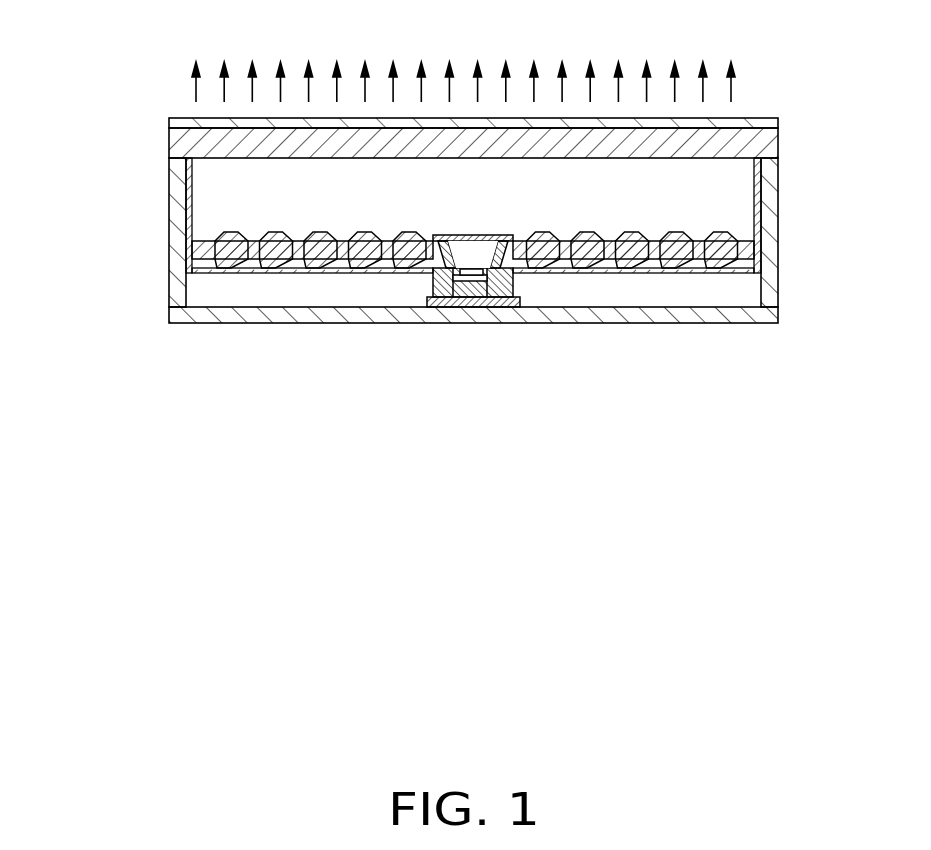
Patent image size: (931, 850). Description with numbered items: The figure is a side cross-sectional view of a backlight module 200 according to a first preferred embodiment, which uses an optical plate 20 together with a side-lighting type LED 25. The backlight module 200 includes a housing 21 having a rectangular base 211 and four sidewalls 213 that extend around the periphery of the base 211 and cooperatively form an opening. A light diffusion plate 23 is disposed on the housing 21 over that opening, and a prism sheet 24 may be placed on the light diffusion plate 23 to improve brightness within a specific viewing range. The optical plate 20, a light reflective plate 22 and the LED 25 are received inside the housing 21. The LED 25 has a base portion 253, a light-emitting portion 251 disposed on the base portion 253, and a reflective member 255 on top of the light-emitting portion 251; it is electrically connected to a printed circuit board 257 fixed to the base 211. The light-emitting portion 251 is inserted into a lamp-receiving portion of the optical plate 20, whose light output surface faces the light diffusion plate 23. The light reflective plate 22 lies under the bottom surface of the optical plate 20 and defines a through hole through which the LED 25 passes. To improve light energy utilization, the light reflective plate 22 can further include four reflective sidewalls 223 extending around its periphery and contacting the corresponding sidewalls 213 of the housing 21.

The backlight module 200 is at (149, 90).
The optical plate 20 is at (752, 253).
The housing 21 is at (394, 258).
The base 211 is at (218, 315).
The sidewalls 213 is at (131, 232).
The light reflective plate 22 is at (530, 234).
The reflective sidewalls 223 is at (770, 218).
The light diffusion plate 23 is at (772, 142).
The prism sheet 24 is at (743, 122).
The side-lighting type LED 25 is at (476, 339).
The light-emitting portion 251 is at (437, 264).
The base portion 253 is at (445, 290).
The reflective member 255 is at (483, 272).
The printed circuit board 257 is at (546, 316).